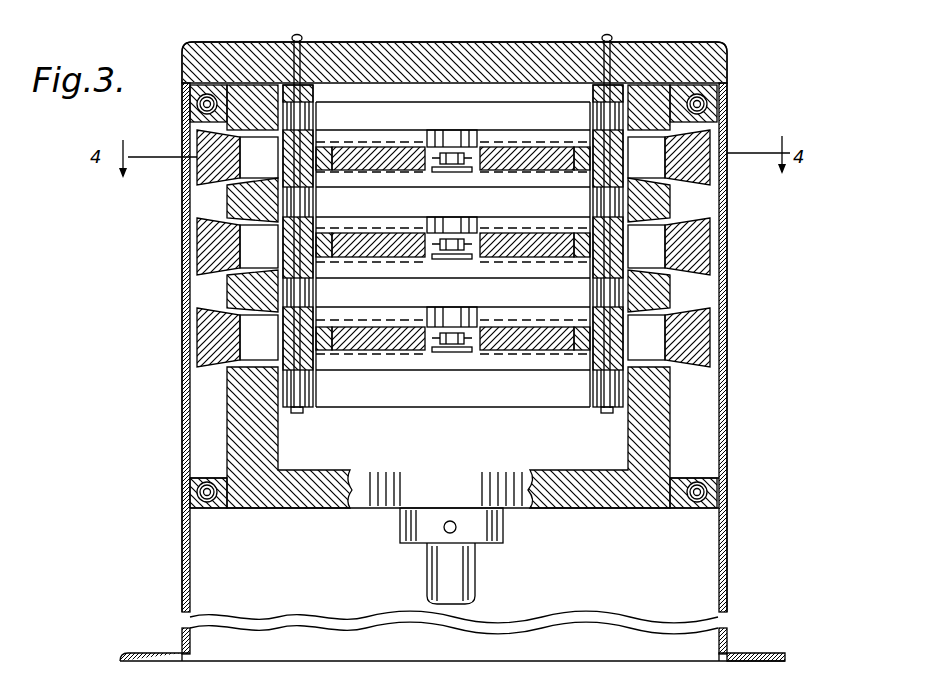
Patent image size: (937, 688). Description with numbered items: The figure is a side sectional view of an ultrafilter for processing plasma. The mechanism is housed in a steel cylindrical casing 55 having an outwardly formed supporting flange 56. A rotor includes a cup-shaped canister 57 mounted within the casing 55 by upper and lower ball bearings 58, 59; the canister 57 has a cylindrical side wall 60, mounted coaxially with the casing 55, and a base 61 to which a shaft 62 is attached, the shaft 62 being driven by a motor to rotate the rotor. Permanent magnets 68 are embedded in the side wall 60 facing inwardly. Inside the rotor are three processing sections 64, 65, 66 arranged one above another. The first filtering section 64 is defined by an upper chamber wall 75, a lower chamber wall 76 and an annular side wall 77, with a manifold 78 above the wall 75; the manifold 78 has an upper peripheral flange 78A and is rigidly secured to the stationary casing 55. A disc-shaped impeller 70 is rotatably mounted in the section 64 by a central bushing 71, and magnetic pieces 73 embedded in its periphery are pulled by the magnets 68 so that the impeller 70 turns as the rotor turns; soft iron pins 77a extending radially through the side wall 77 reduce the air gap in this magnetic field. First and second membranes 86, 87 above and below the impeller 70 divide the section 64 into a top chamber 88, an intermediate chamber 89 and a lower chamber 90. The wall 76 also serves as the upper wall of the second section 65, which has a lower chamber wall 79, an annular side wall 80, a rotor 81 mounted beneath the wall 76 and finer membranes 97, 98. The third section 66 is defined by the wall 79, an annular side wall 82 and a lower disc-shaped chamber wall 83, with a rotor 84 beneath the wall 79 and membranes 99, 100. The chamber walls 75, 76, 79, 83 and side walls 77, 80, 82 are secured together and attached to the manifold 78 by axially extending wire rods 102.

The axially extending wire rods 102 is at (299, 37).
The manifold section 78 is at (436, 58).
The upper peripheral flange 78A is at (661, 56).
The top chamber 88 is at (496, 133).
The upper ball bearing 58 is at (718, 99).
The permanent magnets 68 is at (242, 133).
The annular side wall 77 is at (302, 138).
The disc-shaped impeller 70 is at (368, 146).
The upper chamber wall 75 is at (439, 124).
The central bushing 71 is at (461, 153).
The first membrane 86 is at (523, 141).
The magnetic pieces 73 is at (584, 149).
The soft iron pins 77a is at (316, 158).
The lower chamber 90 is at (370, 182).
The intermediate chamber 89 is at (478, 171).
The first filtering section 64 is at (312, 180).
The annular side wall 80 is at (281, 223).
The rotor 81 is at (381, 232).
The lower chamber wall 76 is at (448, 226).
The membrane 97 is at (500, 226).
The second membrane 87 is at (507, 175).
The lower chamber wall 79 is at (361, 260).
The second section 65 is at (286, 270).
The annular side wall 82 is at (284, 317).
The rotor 84 is at (384, 322).
The membrane 99 is at (453, 326).
The membrane 98 is at (502, 264).
The third section 66 is at (286, 353).
The lower disc-shaped chamber wall 83 is at (453, 374).
The membrane 100 is at (483, 360).
The cylindrical casing 55 is at (730, 409).
The cylindrical side wall 60 is at (245, 441).
The base 61 is at (562, 480).
The lower ball bearing 59 is at (716, 491).
The canister 57 is at (308, 511).
The shaft 62 is at (476, 583).
The supporting flange 56 is at (758, 654).